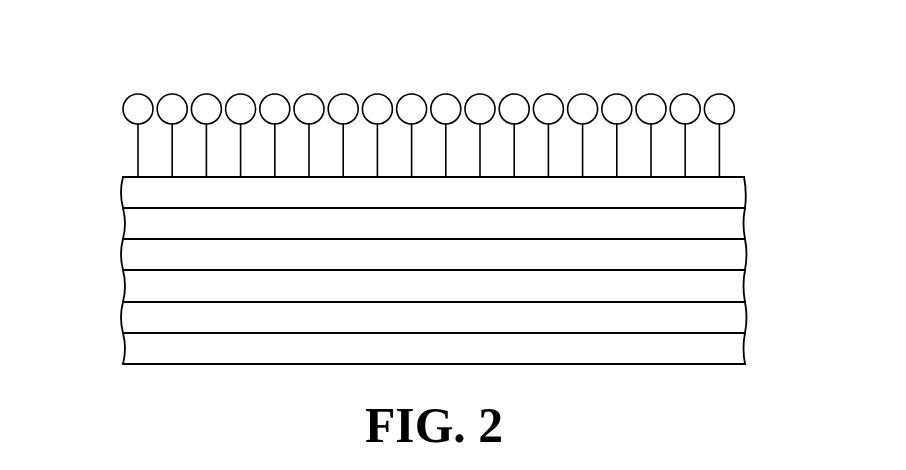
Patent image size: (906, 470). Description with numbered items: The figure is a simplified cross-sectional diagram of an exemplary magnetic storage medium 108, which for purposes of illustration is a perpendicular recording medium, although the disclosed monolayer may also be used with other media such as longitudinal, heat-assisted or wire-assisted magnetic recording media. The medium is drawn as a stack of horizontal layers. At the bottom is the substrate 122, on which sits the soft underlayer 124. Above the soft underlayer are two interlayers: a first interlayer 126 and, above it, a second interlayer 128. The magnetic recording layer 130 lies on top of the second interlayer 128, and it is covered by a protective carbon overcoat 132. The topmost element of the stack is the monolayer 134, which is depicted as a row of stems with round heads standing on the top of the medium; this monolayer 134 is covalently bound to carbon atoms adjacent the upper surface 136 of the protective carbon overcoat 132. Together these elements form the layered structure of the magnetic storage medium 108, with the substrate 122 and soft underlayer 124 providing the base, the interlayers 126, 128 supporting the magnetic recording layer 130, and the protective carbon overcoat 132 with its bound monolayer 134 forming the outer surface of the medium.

The magnetic storage medium 108 is at (150, 61).
The monolayer 134 is at (752, 94).
The upper surface 136 is at (133, 176).
The protective carbon overcoat 132 is at (736, 190).
The magnetic recording layer 130 is at (736, 222).
The second interlayer 128 is at (736, 254).
The first interlayer 126 is at (736, 285).
The soft underlayer 124 is at (736, 316).
The substrate 122 is at (736, 347).